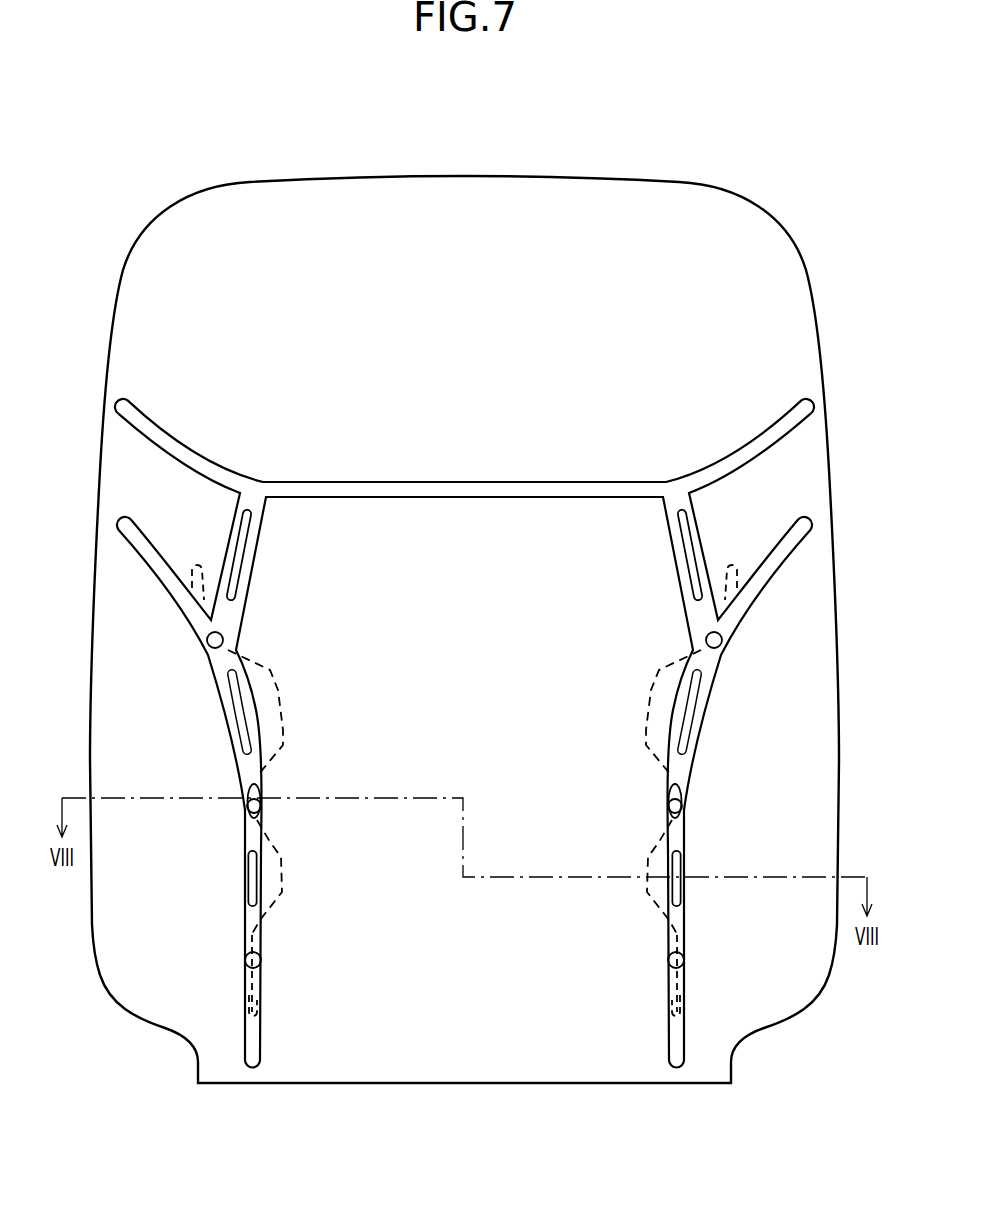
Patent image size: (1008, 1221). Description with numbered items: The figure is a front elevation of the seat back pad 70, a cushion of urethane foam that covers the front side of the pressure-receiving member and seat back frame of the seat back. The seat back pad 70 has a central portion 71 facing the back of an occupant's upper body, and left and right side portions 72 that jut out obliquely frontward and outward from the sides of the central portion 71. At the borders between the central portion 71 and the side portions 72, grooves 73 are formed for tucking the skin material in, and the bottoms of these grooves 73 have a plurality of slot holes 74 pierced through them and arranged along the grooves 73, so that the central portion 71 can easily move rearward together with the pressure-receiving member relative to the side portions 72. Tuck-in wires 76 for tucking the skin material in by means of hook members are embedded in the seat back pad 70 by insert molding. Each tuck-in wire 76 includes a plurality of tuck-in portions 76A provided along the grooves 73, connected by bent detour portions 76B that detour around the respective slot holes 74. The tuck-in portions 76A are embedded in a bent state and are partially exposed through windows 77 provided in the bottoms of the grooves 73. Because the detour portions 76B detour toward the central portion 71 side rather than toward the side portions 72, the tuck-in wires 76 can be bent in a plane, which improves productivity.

The seat back pad 70 is at (566, 176).
The central portion 71 is at (452, 720).
The side portion 72 is at (152, 852).
The groove 73 is at (158, 566).
The slot hole 74 is at (242, 552).
The tuck-in wire 76 is at (288, 700).
The tuck-in portion 76A is at (208, 641).
The bent detour portion 76B is at (286, 727).
The window 77 is at (223, 637).